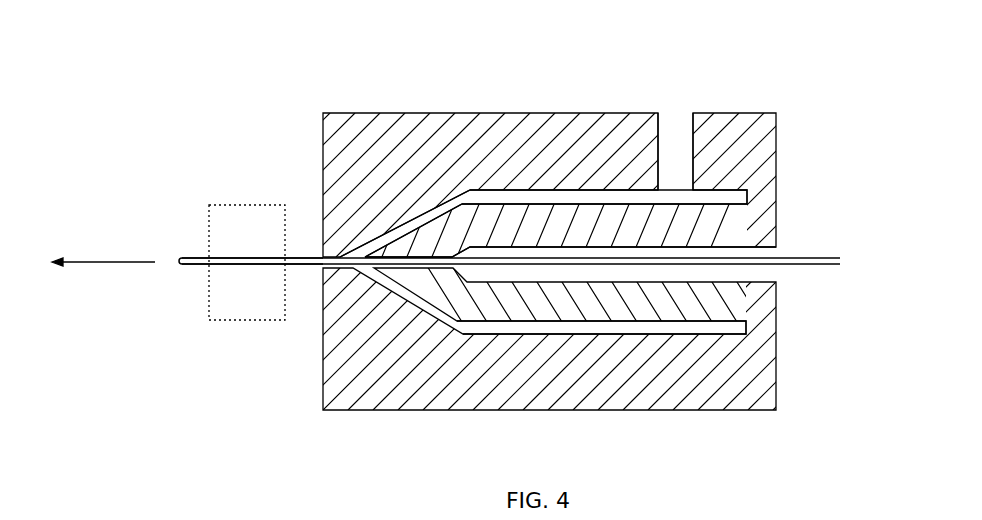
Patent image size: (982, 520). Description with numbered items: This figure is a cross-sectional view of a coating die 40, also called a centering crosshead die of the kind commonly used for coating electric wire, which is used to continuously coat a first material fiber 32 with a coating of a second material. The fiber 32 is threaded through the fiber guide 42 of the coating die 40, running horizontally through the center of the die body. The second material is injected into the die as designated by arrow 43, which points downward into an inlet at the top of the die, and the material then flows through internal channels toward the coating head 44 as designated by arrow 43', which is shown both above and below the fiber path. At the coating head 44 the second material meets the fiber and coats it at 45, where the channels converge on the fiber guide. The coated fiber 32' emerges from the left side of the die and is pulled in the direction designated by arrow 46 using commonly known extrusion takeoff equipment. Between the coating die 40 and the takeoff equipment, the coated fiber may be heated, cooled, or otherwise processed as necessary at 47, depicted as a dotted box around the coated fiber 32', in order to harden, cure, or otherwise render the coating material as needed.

The fiber 32 is at (521, 221).
The coated fiber 32' is at (252, 194).
The coating die 40 is at (405, 441).
The fiber guide 42 is at (427, 253).
The arrow 43 is at (692, 109).
The arrow 43' is at (595, 252).
The coating head 44 is at (344, 255).
The coating location 45 is at (367, 253).
The arrow 46 is at (102, 262).
The processing location 47 is at (263, 323).